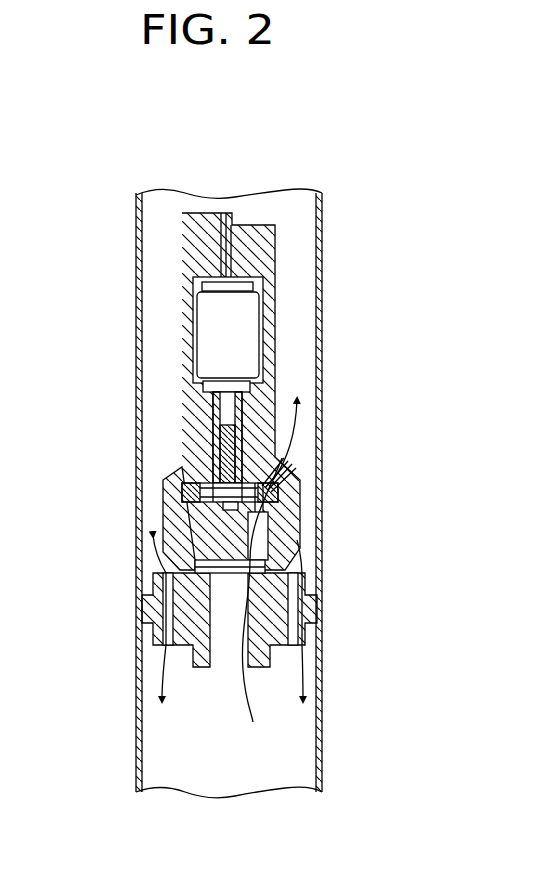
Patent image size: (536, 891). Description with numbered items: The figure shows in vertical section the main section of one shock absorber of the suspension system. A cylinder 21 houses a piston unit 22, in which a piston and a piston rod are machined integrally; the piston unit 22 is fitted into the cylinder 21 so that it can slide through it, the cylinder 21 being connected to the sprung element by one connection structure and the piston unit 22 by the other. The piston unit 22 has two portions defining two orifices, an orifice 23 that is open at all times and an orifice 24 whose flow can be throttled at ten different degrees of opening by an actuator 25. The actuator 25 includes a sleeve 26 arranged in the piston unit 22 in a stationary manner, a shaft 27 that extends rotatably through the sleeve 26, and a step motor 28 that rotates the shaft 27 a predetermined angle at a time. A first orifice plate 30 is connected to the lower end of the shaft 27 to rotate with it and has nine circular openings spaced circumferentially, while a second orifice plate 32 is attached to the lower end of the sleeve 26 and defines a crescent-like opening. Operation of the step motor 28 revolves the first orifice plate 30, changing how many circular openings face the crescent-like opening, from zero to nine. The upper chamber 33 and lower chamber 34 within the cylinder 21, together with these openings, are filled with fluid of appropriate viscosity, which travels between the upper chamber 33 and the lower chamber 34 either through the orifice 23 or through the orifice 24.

The cylinder 21 is at (323, 375).
The piston unit 22 is at (183, 393).
The orifice 23 is at (302, 613).
The orifice 24 is at (265, 528).
The actuator 25 is at (252, 425).
The sleeve 26 is at (213, 438).
The shaft 27 is at (225, 461).
The step motor 28 is at (205, 330).
The first orifice plate 30 is at (196, 511).
The second orifice plate 32 is at (272, 483).
The upper chamber 33 is at (298, 320).
The lower chamber 34 is at (231, 761).